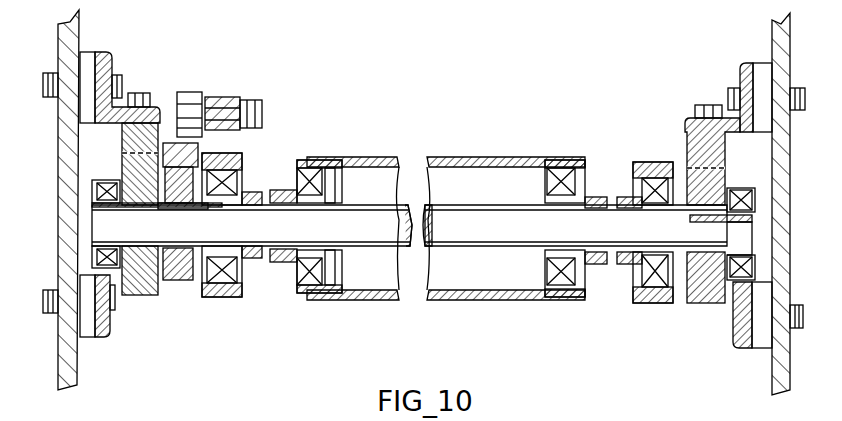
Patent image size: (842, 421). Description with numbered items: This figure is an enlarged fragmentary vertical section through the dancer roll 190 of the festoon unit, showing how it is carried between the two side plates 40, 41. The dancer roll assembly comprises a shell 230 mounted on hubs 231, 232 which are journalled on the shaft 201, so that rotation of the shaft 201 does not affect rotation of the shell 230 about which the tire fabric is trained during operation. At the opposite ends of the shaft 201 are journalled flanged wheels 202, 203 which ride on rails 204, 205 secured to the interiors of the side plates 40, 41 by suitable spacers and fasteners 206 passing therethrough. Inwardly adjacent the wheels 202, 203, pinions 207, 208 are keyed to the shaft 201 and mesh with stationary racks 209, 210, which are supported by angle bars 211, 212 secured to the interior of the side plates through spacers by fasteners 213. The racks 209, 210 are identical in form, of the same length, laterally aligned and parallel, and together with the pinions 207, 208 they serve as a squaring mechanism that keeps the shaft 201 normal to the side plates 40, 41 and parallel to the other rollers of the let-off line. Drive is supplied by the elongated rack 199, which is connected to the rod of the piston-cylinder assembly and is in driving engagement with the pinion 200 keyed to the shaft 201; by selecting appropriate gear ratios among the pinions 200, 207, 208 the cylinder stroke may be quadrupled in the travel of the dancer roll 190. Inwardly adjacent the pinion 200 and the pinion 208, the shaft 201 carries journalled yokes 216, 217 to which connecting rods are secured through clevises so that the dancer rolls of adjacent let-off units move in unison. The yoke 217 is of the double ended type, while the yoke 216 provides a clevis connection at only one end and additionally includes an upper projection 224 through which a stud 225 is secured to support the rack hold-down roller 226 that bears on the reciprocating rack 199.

The side plate 40 is at (62, 347).
The side plate 41 is at (787, 350).
The dancer roll 190 is at (490, 304).
The rack 199 is at (170, 142).
The pinion 200 is at (180, 283).
The shaft 201 is at (505, 225).
The flanged wheel 202 is at (96, 186).
The flanged wheel 203 is at (750, 192).
The rail 204 is at (108, 340).
The rail 205 is at (735, 350).
The fasteners 206 is at (44, 299).
The pinion 207 is at (143, 296).
The pinion 208 is at (705, 304).
The stationary rack 209 is at (128, 150).
The stationary rack 210 is at (717, 148).
The angle bar 211 is at (112, 62).
The angle bar 212 is at (685, 125).
The fasteners 213 is at (45, 90).
The yoke 216 is at (228, 298).
The yoke 217 is at (647, 304).
The upper projection 224 is at (230, 118).
The stud 225 is at (262, 113).
The rack hold-down roller 226 is at (188, 100).
The shell 230 is at (370, 300).
The hub 231 is at (297, 294).
The hub 232 is at (583, 298).